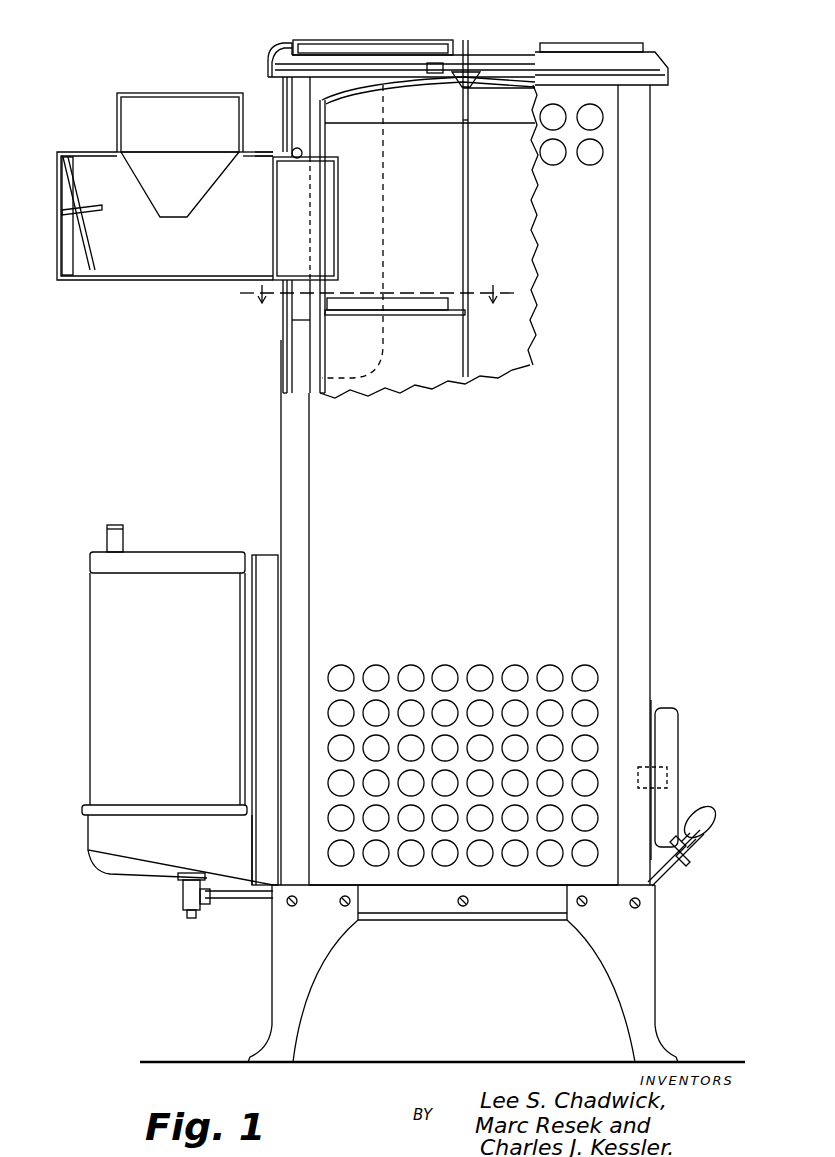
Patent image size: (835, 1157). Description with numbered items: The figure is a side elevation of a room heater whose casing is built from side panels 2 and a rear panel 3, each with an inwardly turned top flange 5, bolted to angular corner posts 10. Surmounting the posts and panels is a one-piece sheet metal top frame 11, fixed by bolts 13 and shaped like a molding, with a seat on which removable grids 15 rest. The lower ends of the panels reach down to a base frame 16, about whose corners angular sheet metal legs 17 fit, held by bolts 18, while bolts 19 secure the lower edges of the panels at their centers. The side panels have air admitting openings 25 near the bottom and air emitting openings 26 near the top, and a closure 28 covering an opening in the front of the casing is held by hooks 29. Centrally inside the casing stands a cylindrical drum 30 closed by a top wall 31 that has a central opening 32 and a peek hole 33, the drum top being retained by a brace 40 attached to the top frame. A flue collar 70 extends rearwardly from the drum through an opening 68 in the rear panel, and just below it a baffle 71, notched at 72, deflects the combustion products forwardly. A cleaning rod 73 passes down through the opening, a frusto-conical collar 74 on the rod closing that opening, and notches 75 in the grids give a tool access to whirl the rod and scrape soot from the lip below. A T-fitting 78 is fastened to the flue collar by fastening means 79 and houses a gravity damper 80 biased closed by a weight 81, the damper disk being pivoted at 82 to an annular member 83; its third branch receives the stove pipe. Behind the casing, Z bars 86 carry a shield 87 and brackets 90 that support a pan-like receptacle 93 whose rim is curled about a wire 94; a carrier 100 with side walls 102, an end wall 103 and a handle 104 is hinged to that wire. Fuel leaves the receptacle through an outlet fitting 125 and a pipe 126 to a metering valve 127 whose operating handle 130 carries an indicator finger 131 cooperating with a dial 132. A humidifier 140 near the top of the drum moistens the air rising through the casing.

The side panel 2 is at (600, 548).
The rear panel 3 is at (283, 350).
The top flange 5 is at (376, 295).
The corner post 10 is at (652, 334).
The top frame 11 is at (668, 62).
The fastening means or bolts 13 is at (350, 77).
The removable grids 15 is at (318, 42).
The base frame 16 is at (428, 905).
The legs 17 is at (304, 977).
The fastening means or bolts 18 is at (343, 905).
The fastening means or bolts 19 is at (465, 906).
The air admitting openings 25 is at (512, 710).
The air emitting openings 26 is at (590, 125).
The closure 28 is at (673, 745).
The hooks 29 is at (641, 767).
The cylindrical drum 30 is at (317, 358).
The top wall 31 is at (362, 112).
The central opening 32 is at (475, 88).
The peek hole 33 is at (532, 85).
The brace 40 is at (435, 63).
The opening 68 is at (290, 151).
The flue collar 70 is at (275, 244).
The baffle 71 is at (428, 318).
The notch 72 is at (452, 314).
The cleaning rod 73 is at (470, 216).
The frusto-conical collar 74 is at (457, 82).
The notches 75 is at (470, 43).
The T-fitting 78 is at (158, 268).
The fastening means 79 is at (300, 158).
The gravity damper 80 is at (68, 232).
The weight 81 is at (100, 213).
The pivot 82 is at (76, 208).
The annular member 83 is at (78, 162).
The Z bars 86 is at (283, 630).
The shield 87 is at (256, 640).
The brackets 90 is at (180, 850).
The receptacle 93 is at (121, 866).
The wire 94 is at (179, 805).
The carrier 100 is at (110, 650).
The side walls 102 is at (167, 689).
The end wall 103 is at (218, 562).
The handle 104 is at (122, 536).
The outlet fitting 125 is at (178, 902).
The pipe 126 is at (258, 900).
The valve 127 is at (665, 868).
The operating handle 130 is at (707, 820).
The indicator finger 131 is at (700, 849).
The dial 132 is at (688, 860).
The humidifier 140 is at (305, 325).